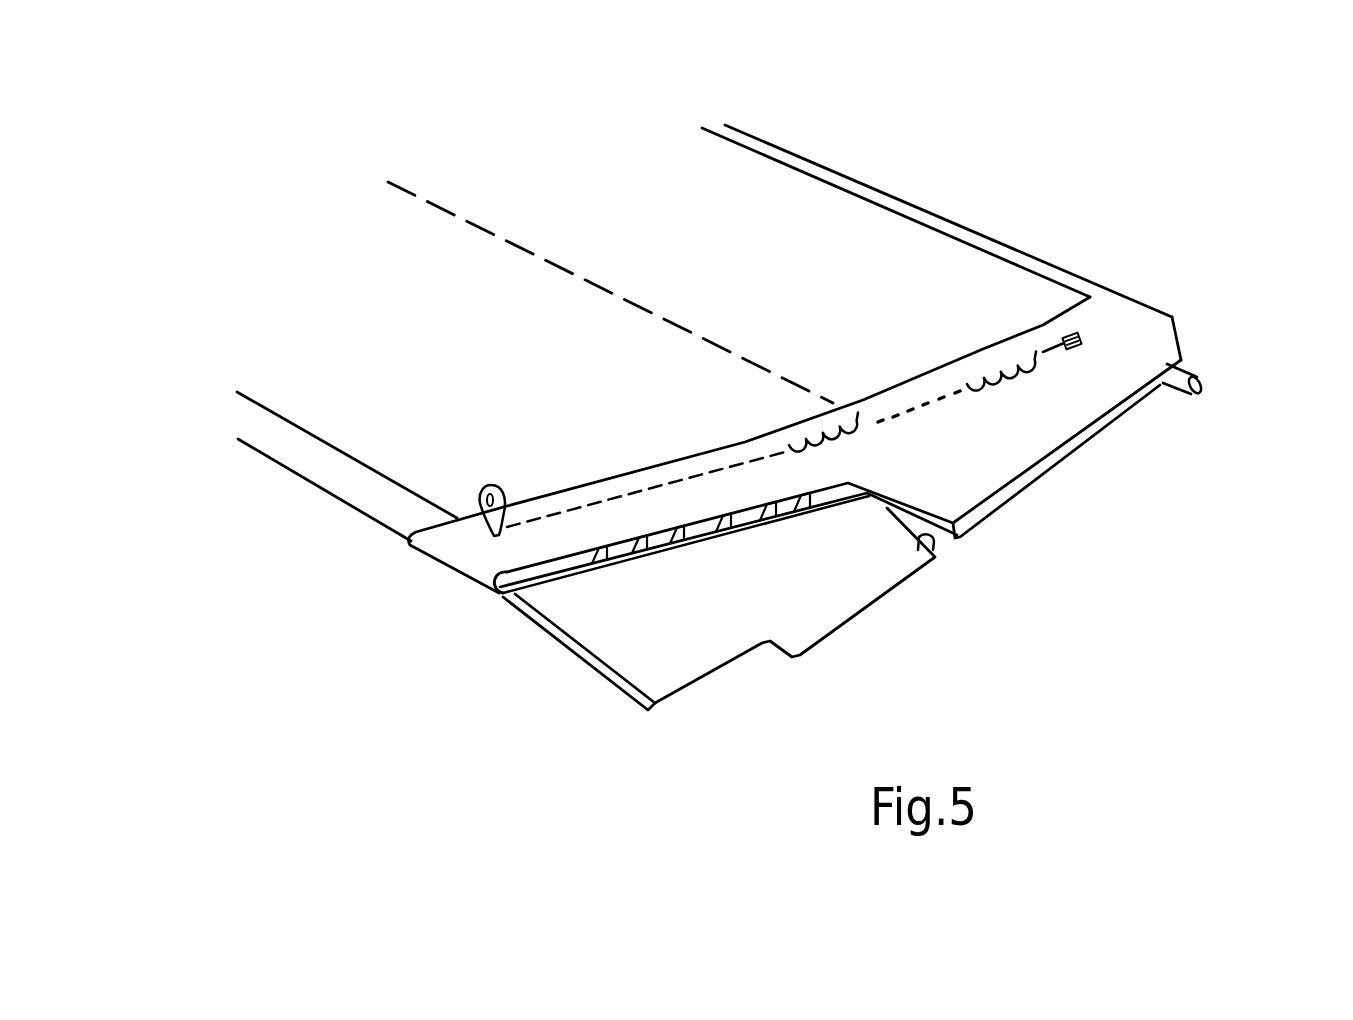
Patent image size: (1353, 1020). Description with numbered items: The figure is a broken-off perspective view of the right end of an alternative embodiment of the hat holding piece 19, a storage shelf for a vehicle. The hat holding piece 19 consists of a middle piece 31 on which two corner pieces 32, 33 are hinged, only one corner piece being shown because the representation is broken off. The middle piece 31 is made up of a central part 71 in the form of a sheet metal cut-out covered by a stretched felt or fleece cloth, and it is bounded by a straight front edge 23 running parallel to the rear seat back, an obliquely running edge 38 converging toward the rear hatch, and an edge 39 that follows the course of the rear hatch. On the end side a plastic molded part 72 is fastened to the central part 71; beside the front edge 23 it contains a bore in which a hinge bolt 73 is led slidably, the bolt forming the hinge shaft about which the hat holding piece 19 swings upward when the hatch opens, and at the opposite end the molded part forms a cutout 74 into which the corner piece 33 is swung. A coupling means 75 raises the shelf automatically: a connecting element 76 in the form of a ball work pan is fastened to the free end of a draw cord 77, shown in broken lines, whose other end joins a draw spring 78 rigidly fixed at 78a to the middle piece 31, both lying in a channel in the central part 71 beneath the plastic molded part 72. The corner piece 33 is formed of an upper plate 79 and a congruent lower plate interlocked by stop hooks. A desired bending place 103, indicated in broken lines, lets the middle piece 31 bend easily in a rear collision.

The hat holding piece 19 is at (1200, 194).
The front edge 23 is at (937, 217).
The middle piece 31 is at (276, 470).
The corner piece 32 is at (679, 725).
The corner piece 33 is at (725, 605).
The obliquely running edge 38 is at (853, 479).
The edge 39 is at (237, 432).
The central part 71 is at (487, 324).
The plastic molded part 72 is at (1153, 342).
The hinge bolt 73 is at (1185, 392).
The cutout 74 is at (956, 540).
The coupling means 75 is at (516, 476).
The connecting element 76 is at (492, 486).
The draw cord 77 is at (608, 503).
The draw spring 78 is at (857, 428).
The joint of draw spring 78a is at (1070, 338).
The upper plate 79 is at (828, 603).
The desired bending place 103 is at (543, 257).